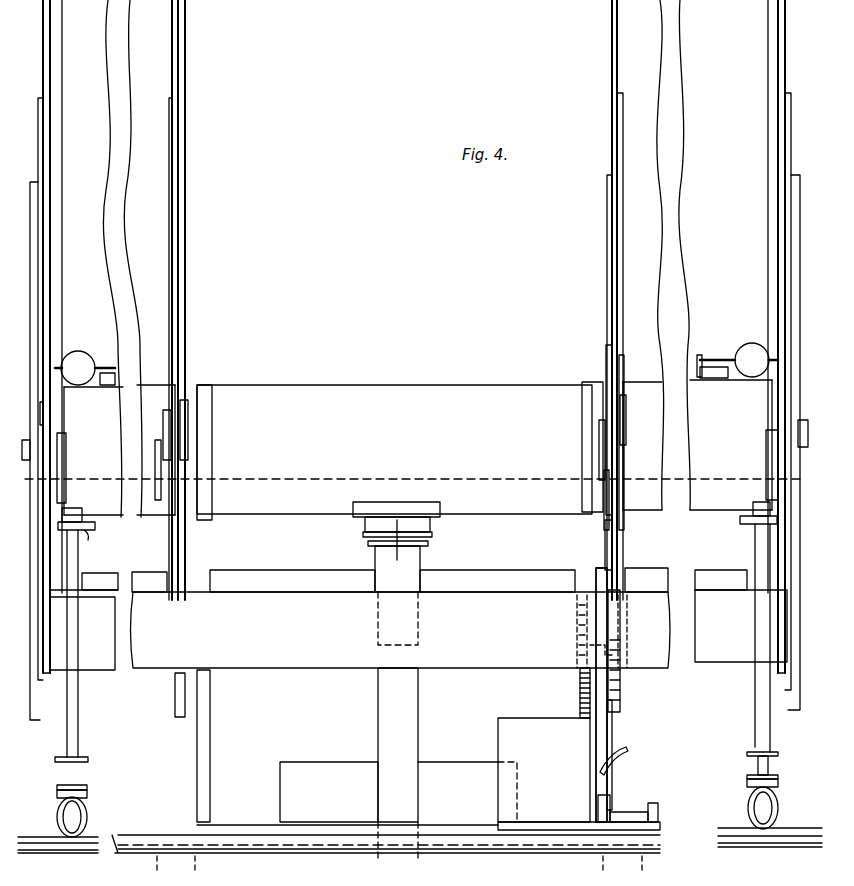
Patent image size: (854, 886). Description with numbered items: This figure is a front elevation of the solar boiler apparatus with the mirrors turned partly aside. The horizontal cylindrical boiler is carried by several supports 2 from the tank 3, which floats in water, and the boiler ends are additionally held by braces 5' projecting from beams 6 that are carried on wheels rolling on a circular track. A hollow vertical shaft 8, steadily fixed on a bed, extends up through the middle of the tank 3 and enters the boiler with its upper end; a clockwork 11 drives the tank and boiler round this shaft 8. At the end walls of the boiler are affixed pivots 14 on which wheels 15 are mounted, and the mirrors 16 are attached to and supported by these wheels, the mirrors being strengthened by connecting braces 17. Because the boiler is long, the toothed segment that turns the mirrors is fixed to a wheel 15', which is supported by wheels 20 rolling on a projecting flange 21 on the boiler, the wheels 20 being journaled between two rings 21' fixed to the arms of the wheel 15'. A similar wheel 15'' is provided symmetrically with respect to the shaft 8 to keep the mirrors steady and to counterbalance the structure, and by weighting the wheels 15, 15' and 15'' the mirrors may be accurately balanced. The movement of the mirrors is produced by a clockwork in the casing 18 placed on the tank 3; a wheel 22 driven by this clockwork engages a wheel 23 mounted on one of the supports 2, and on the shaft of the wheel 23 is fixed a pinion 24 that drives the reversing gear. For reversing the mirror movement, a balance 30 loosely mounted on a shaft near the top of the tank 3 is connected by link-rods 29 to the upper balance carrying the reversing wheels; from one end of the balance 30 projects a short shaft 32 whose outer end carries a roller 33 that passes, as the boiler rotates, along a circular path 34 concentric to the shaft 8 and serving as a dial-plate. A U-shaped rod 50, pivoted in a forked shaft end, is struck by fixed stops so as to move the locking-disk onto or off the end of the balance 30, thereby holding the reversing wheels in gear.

The supports 2 is at (210, 745).
The tank 3 is at (386, 852).
The braces 5' is at (424, 629).
The beams 6 is at (78, 773).
The vertical shaft 8 is at (398, 726).
The clockwork 11 is at (398, 792).
The pivots 14 is at (62, 445).
The wheels 15 is at (414, 360).
The wheel 15' is at (598, 300).
The wheel 15'' is at (193, 300).
The mirrors 16 is at (418, 642).
The braces 17 is at (50, 43).
The casing 18 is at (544, 770).
The wheels 20 is at (612, 340).
The projecting flange 21 is at (413, 427).
The rings 21' is at (398, 444).
The wheel 22 is at (580, 707).
The wheel 23 is at (577, 628).
The pinion 24 is at (622, 640).
The link-rods 29 is at (612, 730).
The balance 30 is at (610, 796).
The short shaft 32 is at (629, 808).
The roller 33 is at (658, 805).
The circular path 34 is at (660, 826).
The U-shaped rod 50 is at (624, 753).